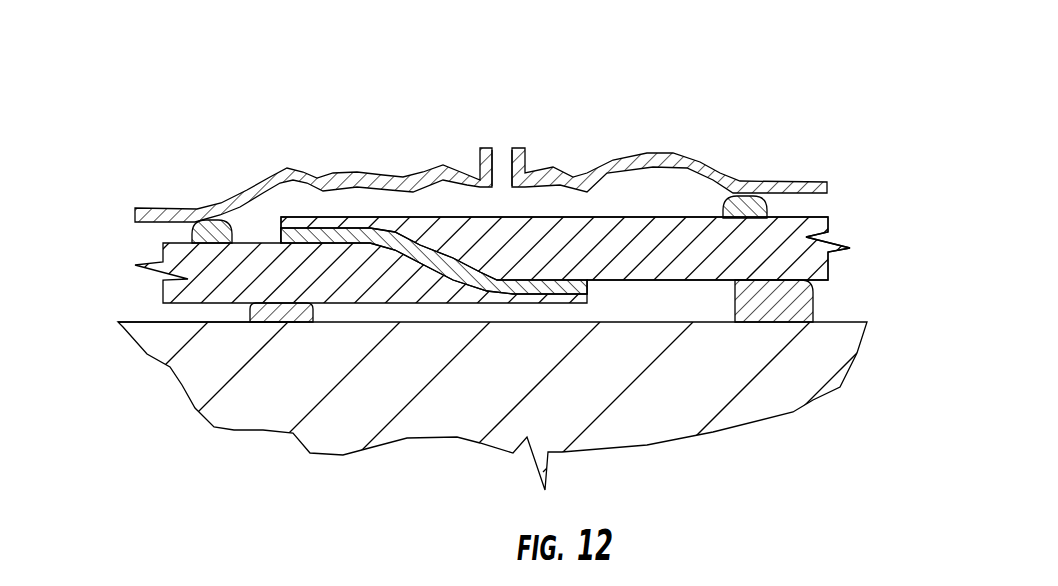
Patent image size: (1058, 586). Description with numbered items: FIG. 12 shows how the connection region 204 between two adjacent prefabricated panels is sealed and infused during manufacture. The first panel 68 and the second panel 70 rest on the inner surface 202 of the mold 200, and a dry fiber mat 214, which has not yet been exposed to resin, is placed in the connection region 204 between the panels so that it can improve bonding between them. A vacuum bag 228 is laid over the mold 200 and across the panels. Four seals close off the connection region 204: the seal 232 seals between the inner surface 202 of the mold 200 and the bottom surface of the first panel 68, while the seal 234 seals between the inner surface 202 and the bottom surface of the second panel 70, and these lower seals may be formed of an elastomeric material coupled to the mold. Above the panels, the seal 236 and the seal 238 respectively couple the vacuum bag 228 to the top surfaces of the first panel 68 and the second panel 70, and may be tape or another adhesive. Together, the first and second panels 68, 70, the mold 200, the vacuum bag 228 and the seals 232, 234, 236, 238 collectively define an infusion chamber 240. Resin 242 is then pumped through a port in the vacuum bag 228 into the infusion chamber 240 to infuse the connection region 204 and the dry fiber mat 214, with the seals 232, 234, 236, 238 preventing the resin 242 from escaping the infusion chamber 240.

The first panel 68 is at (170, 290).
The second panel 70 is at (828, 227).
The mold 200 is at (633, 420).
The inner surface of the mold 202 is at (147, 322).
The connection region 204 is at (122, 64).
The dry fiber mat 214 is at (275, 239).
The vacuum bag 228 is at (295, 168).
The seal 232 is at (279, 315).
The seal 234 is at (813, 308).
The seal 236 is at (190, 238).
The seal 238 is at (723, 210).
The infusion chamber 240 is at (440, 187).
The resin 242 is at (505, 130).